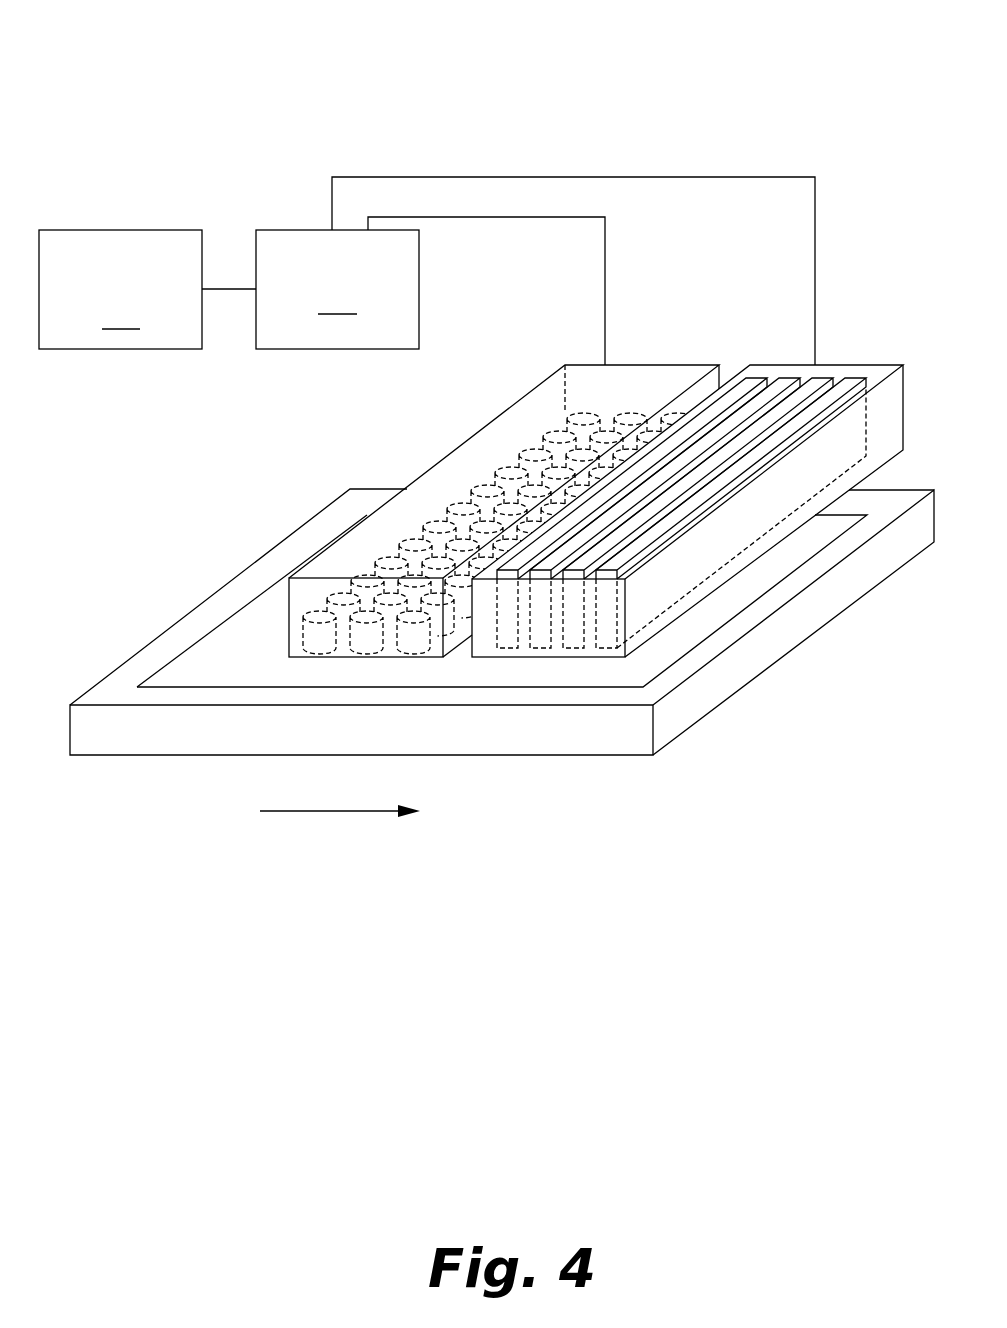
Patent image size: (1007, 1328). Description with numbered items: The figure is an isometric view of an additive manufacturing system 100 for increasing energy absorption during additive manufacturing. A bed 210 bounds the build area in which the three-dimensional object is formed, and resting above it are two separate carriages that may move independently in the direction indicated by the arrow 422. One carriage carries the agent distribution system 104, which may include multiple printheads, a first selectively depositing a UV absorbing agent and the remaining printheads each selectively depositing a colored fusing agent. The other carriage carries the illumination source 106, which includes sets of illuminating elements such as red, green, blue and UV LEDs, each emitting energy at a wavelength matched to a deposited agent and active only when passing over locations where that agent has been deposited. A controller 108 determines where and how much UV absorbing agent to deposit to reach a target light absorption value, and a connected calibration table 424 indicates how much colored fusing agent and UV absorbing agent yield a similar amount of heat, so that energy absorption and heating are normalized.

The additive manufacturing system 100 is at (308, 100).
The agent distribution system 104 is at (849, 375).
The illumination source 106 is at (620, 379).
The controller 108 is at (535, 271).
The bed 210 is at (358, 505).
The arrow 422 is at (275, 813).
The calibration table 424 is at (147, 289).